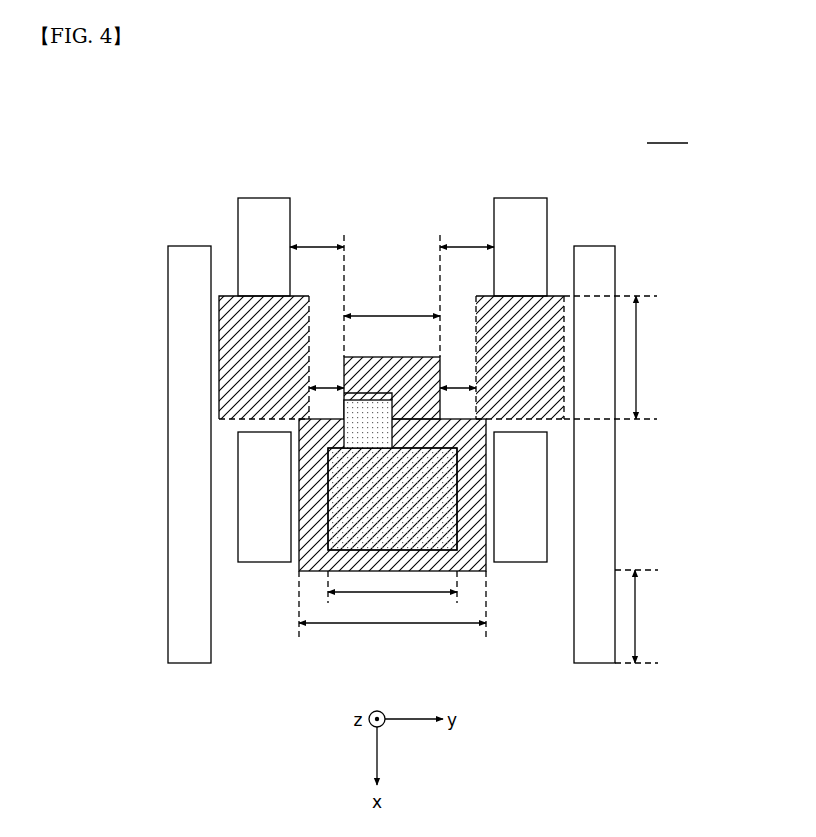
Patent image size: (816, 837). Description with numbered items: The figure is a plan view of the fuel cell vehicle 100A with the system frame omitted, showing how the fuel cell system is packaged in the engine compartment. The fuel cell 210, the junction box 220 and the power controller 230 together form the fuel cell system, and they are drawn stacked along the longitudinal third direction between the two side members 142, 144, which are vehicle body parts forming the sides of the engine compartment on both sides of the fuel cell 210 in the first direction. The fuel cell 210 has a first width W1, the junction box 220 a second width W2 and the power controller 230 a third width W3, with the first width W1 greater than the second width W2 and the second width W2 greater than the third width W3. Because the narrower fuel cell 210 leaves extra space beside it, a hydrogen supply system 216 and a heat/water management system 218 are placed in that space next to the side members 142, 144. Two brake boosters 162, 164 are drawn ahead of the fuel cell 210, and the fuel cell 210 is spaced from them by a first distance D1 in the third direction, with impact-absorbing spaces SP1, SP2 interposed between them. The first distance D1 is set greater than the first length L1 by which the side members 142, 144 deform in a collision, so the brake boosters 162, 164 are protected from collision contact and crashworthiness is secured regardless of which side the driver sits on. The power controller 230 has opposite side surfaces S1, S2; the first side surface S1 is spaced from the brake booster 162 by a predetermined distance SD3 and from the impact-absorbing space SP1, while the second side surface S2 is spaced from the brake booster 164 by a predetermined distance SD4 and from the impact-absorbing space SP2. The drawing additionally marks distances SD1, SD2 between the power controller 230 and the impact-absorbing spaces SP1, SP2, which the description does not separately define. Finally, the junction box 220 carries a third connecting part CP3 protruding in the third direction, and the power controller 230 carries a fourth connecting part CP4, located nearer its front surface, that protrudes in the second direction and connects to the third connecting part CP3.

The fuel cell vehicle 100A is at (667, 132).
The side member 142 is at (190, 658).
The side member 144 is at (598, 658).
The brake booster 162 is at (262, 206).
The brake booster 164 is at (520, 206).
The fuel cell 210 is at (315, 571).
The hydrogen supply system 216 is at (250, 553).
The heat/water management system 218 is at (535, 553).
The junction box 220 is at (460, 540).
The power controller 230 is at (427, 357).
The impact-absorbing space SP1 is at (232, 358).
The impact-absorbing space SP2 is at (547, 403).
The third connecting part CP3 is at (385, 412).
The fourth connecting part CP4 is at (368, 398).
The first opposite side surface S1 is at (352, 357).
The second opposite side surface S2 is at (440, 405).
The first separation distance SD1 is at (326, 375).
The second separation distance SD2 is at (458, 375).
The predetermined distance SD3 is at (317, 232).
The predetermined distance SD4 is at (467, 232).
The first width W1 is at (392, 635).
The second width W2 is at (392, 603).
The third width W3 is at (392, 303).
The first distance D1 is at (650, 357).
The first length L1 is at (648, 616).